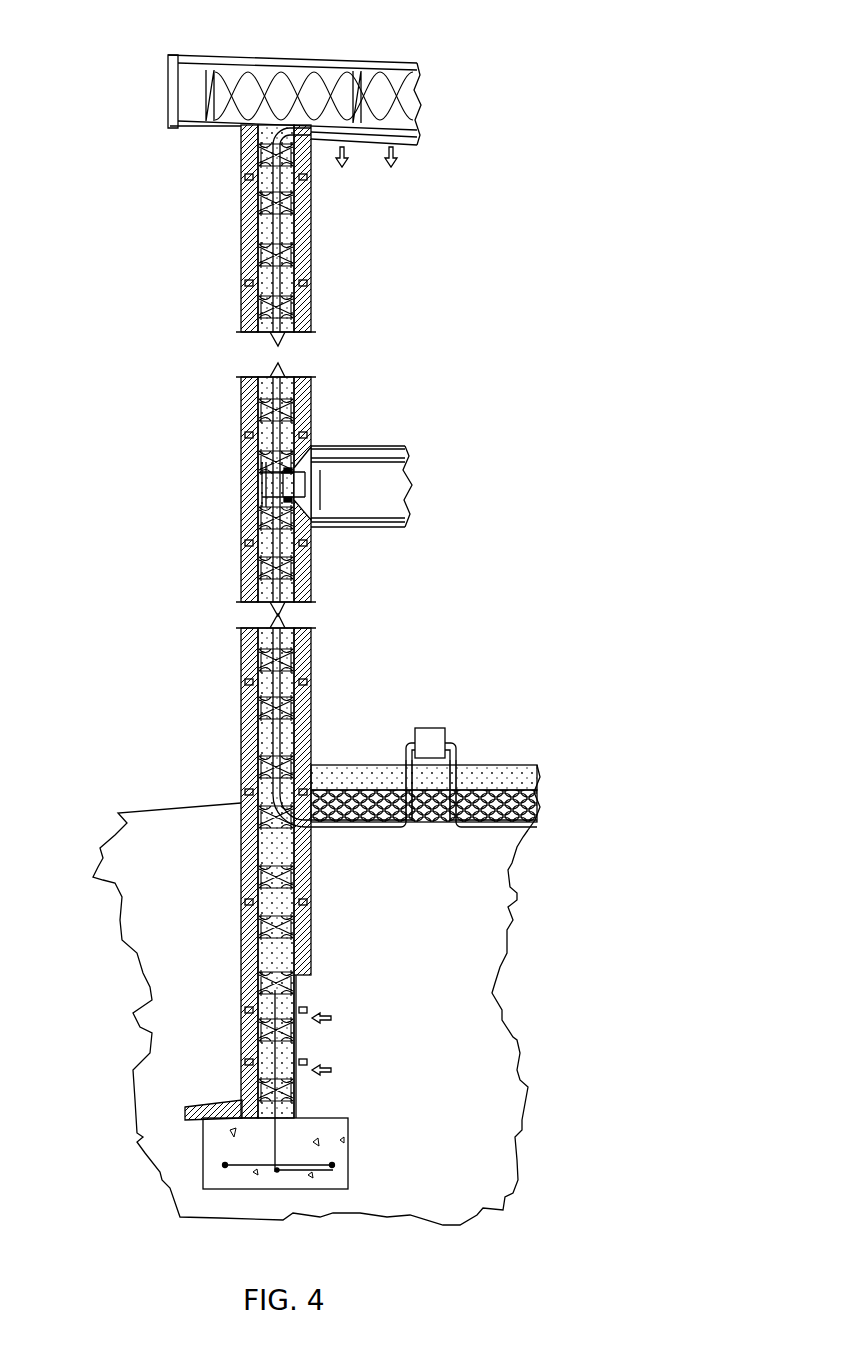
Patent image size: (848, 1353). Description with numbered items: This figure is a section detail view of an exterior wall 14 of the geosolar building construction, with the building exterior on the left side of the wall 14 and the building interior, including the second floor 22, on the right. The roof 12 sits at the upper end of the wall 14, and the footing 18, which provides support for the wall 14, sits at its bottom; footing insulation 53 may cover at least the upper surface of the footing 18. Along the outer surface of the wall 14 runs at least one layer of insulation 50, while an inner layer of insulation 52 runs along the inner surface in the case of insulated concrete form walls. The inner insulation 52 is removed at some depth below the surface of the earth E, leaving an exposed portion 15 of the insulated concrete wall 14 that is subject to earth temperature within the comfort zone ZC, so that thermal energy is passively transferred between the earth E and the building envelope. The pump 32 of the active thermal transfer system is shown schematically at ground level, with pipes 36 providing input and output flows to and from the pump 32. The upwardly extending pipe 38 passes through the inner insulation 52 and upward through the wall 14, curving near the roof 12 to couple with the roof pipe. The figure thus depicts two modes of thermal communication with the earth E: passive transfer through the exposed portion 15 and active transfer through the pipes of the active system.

The roof 12 is at (430, 58).
The second floor 22 is at (410, 432).
The insulation 50 is at (241, 703).
The inner layer of insulation 52 is at (311, 878).
The wall 14 is at (296, 1052).
The exposed portion 15 is at (306, 1094).
The upwardly extending pipe 38 is at (278, 680).
The pipes 36 is at (409, 745).
The pump 32 is at (432, 735).
The comfort zone ZC is at (350, 843).
The earth E is at (115, 881).
The footing 18 is at (360, 1138).
The footing insulation 53 is at (215, 1103).